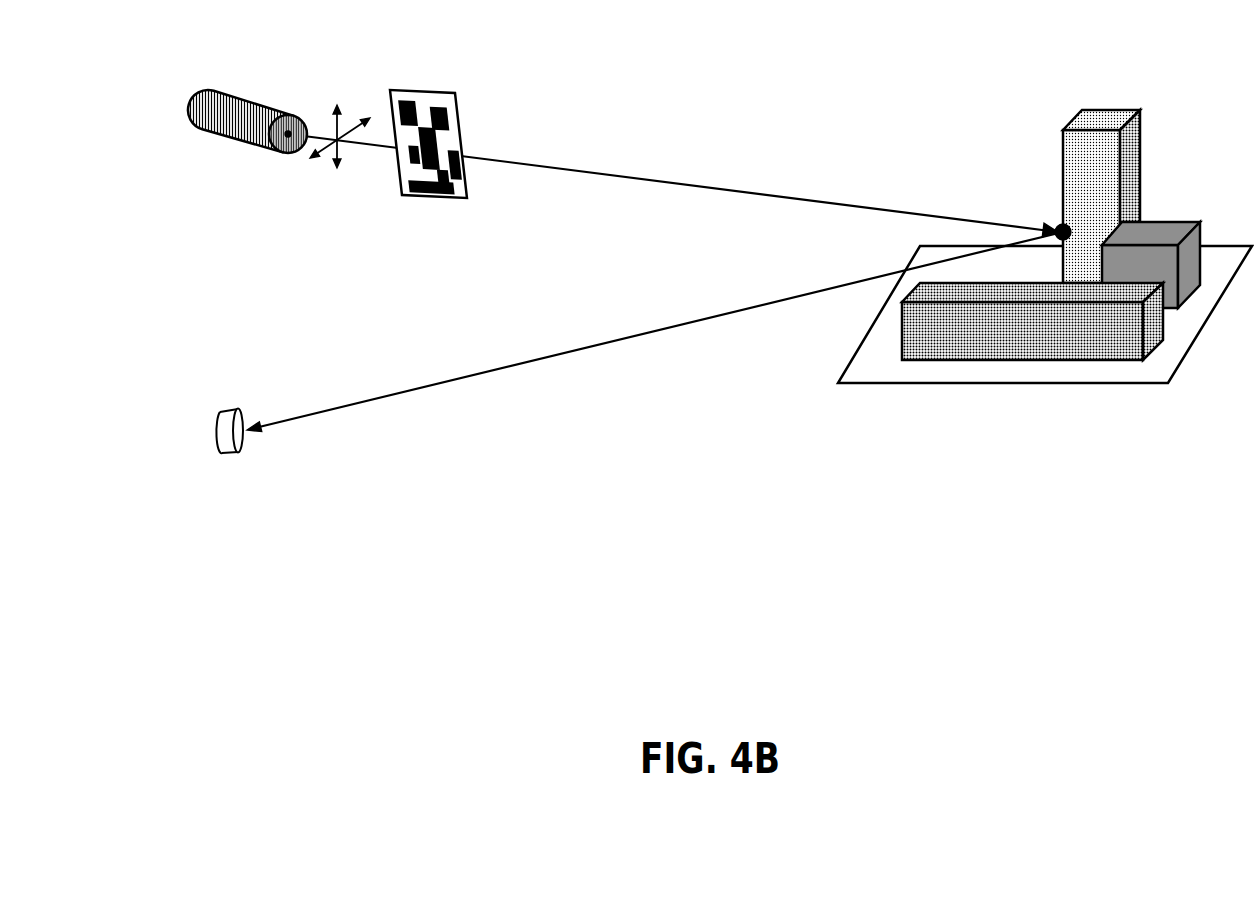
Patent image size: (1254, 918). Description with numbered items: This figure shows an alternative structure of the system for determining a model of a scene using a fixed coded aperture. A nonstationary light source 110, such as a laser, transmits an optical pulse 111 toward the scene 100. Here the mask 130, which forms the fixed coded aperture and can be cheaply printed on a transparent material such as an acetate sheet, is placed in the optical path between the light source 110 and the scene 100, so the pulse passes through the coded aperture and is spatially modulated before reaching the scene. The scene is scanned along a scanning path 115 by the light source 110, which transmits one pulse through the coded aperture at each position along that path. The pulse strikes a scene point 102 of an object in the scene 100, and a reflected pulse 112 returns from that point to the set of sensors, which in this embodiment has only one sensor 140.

The scene 100 is at (1100, 113).
The scene point 102 is at (1070, 228).
The light source 110 is at (230, 91).
The optical pulse 111 is at (602, 172).
The reflected pulse 112 is at (675, 328).
The scanning path 115 is at (320, 173).
The mask 130 is at (422, 92).
The sensor 140 is at (243, 408).